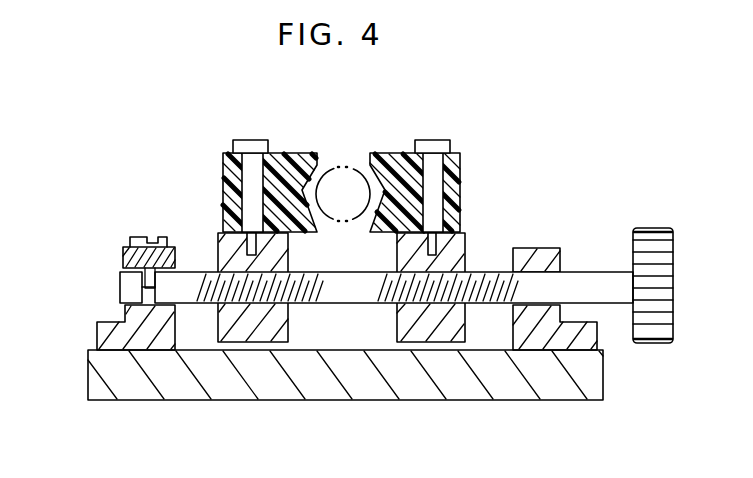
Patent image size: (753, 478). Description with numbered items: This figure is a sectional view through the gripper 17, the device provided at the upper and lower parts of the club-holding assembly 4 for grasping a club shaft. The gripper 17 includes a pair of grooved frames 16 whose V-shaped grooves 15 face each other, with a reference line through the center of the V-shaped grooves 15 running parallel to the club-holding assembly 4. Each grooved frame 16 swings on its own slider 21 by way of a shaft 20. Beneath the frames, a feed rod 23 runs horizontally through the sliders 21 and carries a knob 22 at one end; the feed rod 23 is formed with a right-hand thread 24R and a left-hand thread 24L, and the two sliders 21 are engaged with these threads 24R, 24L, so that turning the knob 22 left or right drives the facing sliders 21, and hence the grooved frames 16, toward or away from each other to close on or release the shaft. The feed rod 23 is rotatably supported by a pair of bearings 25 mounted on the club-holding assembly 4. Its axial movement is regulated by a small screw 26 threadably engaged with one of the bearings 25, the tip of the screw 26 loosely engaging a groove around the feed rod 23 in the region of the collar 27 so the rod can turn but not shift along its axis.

The club-holding assembly 4 is at (102, 376).
The V-shaped groove 15 is at (303, 193).
The grooved frame 16 is at (227, 165).
The gripper 17 is at (339, 163).
The shaft 20 is at (250, 185).
The slider 21 is at (235, 337).
The knob 22 is at (653, 237).
The feed rod 23 is at (585, 280).
The left-hand thread 24L is at (293, 288).
The right-hand thread 24R is at (427, 298).
The bearing 25 is at (147, 338).
The small screw 26 is at (143, 243).
The collar 27 is at (150, 293).